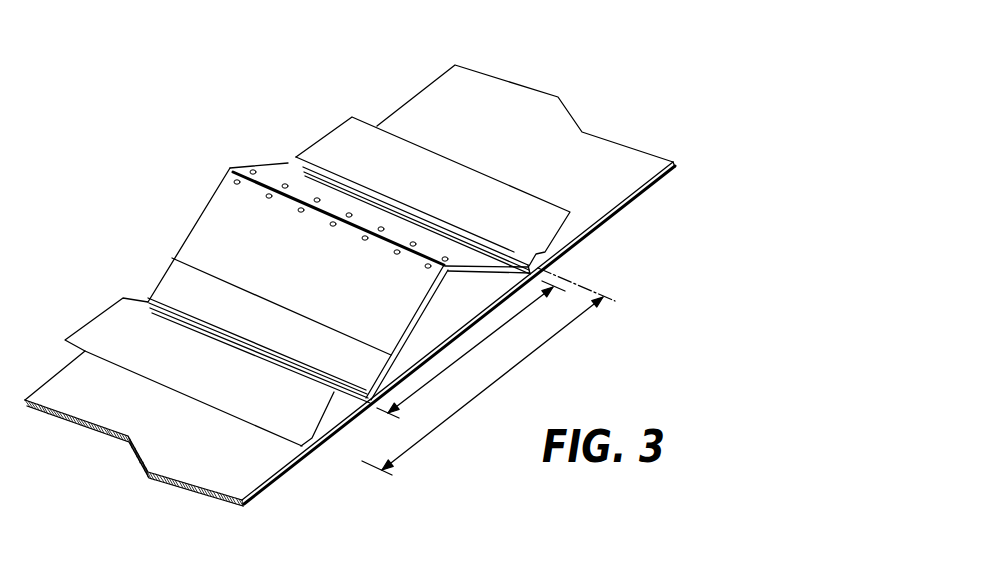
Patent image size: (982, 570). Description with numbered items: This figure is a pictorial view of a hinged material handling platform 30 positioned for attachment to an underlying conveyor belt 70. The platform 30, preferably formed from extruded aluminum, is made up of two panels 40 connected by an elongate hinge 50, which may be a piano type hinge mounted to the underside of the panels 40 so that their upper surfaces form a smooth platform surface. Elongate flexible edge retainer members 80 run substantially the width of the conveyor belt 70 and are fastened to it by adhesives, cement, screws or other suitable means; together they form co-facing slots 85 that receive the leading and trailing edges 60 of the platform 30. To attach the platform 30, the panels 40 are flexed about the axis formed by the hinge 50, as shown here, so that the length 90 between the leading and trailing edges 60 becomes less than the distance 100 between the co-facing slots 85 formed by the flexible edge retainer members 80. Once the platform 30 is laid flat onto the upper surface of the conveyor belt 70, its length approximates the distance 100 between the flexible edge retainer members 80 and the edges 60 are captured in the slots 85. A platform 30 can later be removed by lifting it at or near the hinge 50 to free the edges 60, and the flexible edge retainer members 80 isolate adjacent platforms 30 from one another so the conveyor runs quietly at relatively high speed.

The platform 30 is at (270, 170).
The panels 40 is at (207, 232).
The elongate hinge 50 is at (256, 181).
The edges 60 is at (147, 302).
The conveyor belt 70 is at (427, 100).
The flexible edge retainer members 80 is at (524, 210).
The co-facing slots 85 is at (301, 166).
The length 90 is at (447, 366).
The distance 100 is at (538, 350).